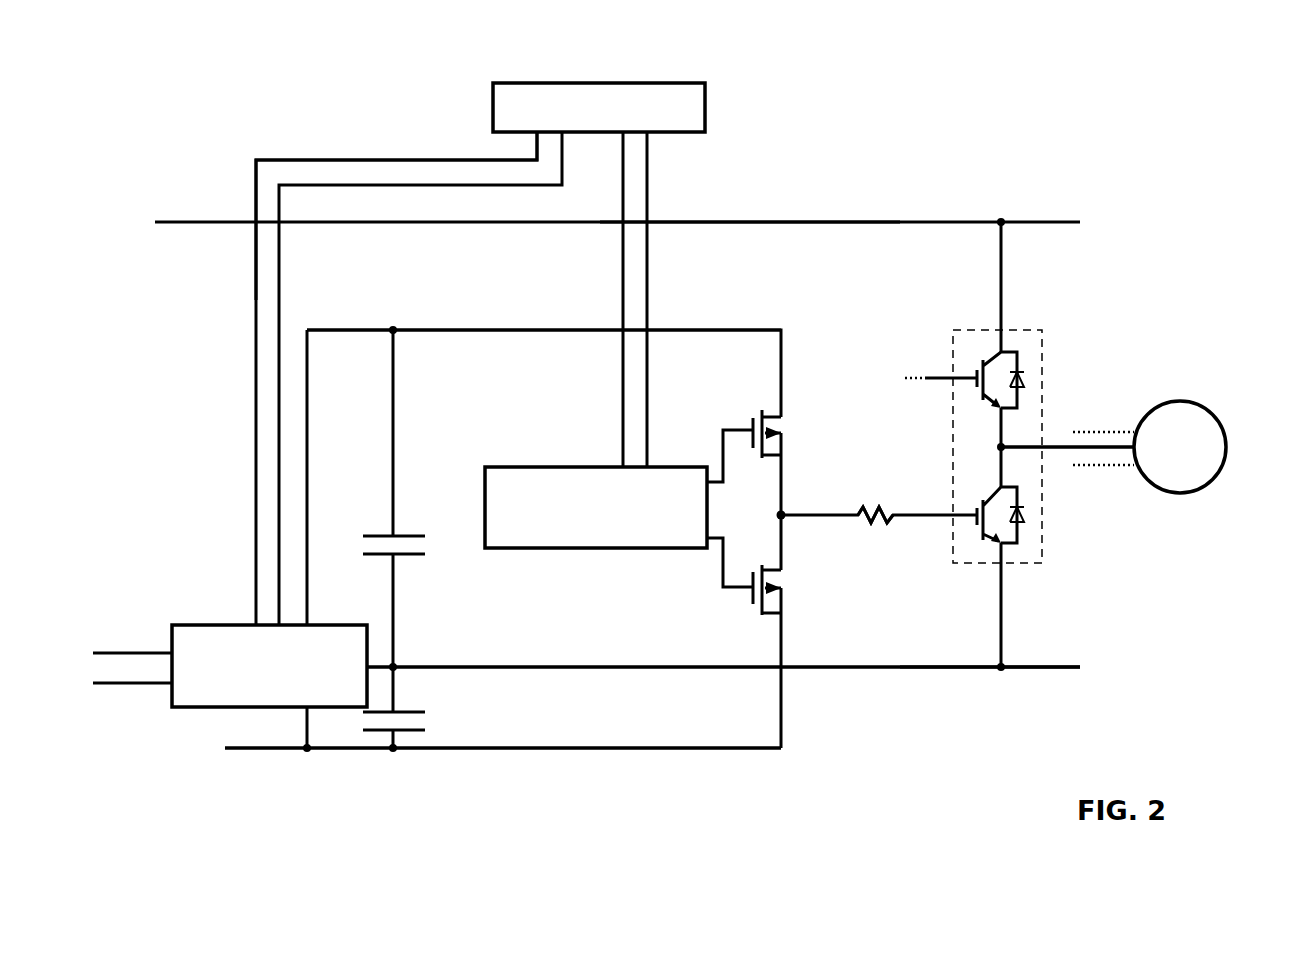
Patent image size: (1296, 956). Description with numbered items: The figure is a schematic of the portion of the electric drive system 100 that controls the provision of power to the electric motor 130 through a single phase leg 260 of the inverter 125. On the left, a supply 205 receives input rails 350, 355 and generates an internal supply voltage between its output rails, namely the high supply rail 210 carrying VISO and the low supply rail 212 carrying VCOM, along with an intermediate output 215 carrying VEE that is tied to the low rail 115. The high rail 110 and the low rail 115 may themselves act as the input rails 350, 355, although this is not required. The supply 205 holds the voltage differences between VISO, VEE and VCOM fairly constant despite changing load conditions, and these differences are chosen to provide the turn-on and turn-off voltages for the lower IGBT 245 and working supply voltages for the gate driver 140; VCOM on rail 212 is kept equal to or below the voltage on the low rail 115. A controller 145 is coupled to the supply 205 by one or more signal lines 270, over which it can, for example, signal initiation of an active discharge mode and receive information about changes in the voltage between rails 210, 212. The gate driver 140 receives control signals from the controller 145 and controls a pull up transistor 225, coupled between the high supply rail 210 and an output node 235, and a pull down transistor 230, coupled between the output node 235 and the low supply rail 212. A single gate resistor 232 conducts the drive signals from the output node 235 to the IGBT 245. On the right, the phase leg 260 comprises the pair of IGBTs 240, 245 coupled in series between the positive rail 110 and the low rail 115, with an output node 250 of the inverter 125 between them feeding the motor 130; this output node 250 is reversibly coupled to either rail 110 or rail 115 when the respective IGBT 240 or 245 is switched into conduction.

The electric drive system 100 is at (1142, 295).
The high rail 110 is at (863, 220).
The low rail 115 is at (960, 670).
The inverter 125 is at (1023, 425).
The electric motor 130 is at (1221, 423).
The gate driver 140 is at (525, 553).
The controller 145 is at (708, 107).
The supply 205 is at (217, 618).
The high supply rail 210 is at (465, 331).
The low supply rail 212 is at (477, 750).
The intermediate output 215 is at (525, 670).
The pull up transistor 225 is at (790, 430).
The pull down transistor 230 is at (790, 590).
The gate resistor 232 is at (878, 530).
The output node 235 is at (783, 513).
The IGBT 240 is at (1020, 363).
The IGBT 245 is at (1023, 538).
The output node 250 is at (1004, 449).
The phase leg 260 is at (952, 330).
The signal lines 270 is at (376, 149).
The input rail 350 is at (123, 643).
The input rail 355 is at (125, 695).